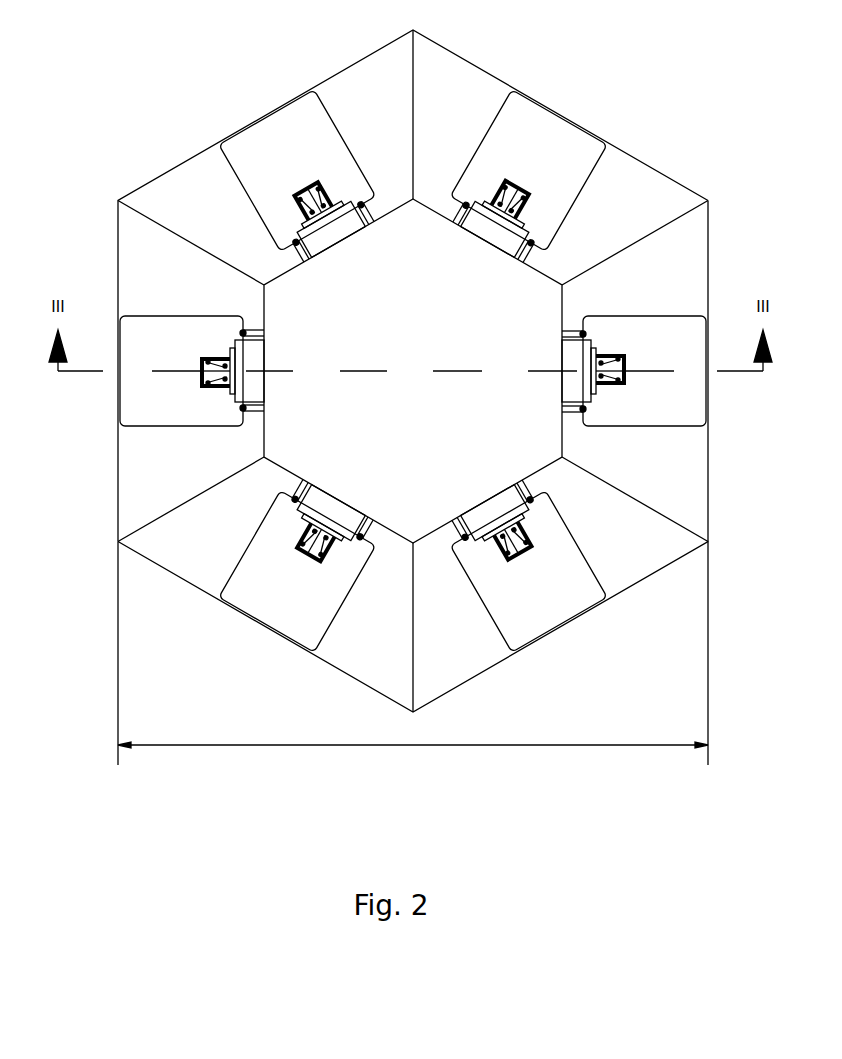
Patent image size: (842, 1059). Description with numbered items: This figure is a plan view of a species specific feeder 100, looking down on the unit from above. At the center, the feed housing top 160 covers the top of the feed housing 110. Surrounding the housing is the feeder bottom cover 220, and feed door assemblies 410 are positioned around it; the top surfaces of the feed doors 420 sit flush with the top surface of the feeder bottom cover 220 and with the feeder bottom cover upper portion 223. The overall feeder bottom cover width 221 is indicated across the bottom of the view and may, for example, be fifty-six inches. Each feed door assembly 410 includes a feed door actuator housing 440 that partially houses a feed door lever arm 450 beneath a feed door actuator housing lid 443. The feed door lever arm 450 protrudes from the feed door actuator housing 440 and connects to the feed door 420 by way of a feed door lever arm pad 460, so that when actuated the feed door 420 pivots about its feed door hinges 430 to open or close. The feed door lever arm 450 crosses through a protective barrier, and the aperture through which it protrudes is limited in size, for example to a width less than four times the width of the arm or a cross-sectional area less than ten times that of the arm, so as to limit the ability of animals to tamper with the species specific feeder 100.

The species specific feeder 100 is at (325, 303).
The feed housing 110 is at (325, 421).
The feed housing top 160 is at (453, 421).
The feeder bottom cover 220 is at (166, 217).
The feeder bottom cover width 221 is at (397, 745).
The feeder bottom cover upper portion 223 is at (193, 541).
The feed door assembly 410 is at (535, 167).
The feed door 420 is at (255, 186).
The feed door hinge 430 is at (300, 229).
The feed door actuator housing 440 is at (453, 211).
The feed door actuator housing lid 443 is at (372, 213).
The feed door lever arm 450 is at (331, 197).
The feed door lever arm pad 460 is at (522, 190).